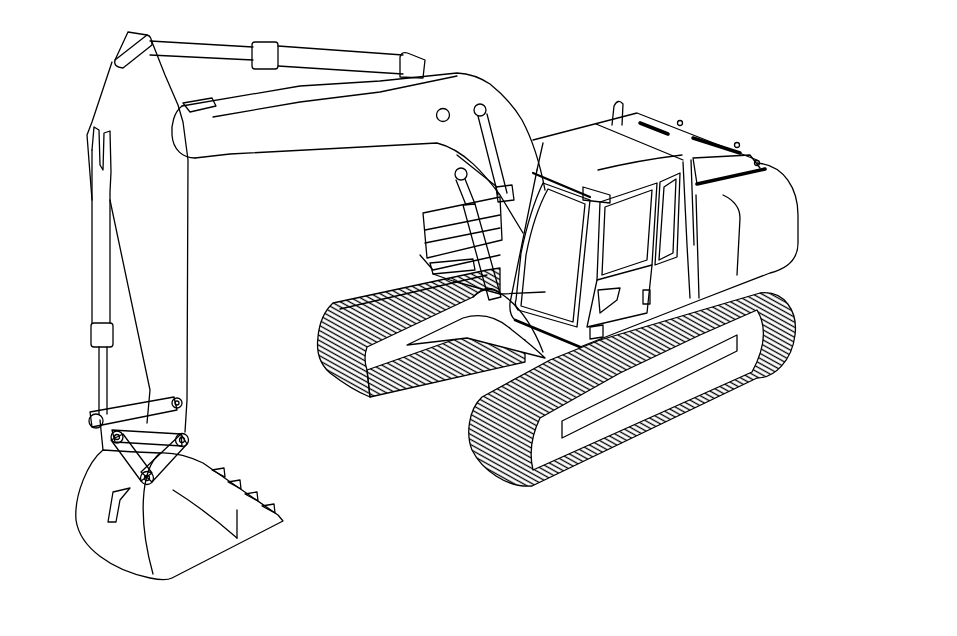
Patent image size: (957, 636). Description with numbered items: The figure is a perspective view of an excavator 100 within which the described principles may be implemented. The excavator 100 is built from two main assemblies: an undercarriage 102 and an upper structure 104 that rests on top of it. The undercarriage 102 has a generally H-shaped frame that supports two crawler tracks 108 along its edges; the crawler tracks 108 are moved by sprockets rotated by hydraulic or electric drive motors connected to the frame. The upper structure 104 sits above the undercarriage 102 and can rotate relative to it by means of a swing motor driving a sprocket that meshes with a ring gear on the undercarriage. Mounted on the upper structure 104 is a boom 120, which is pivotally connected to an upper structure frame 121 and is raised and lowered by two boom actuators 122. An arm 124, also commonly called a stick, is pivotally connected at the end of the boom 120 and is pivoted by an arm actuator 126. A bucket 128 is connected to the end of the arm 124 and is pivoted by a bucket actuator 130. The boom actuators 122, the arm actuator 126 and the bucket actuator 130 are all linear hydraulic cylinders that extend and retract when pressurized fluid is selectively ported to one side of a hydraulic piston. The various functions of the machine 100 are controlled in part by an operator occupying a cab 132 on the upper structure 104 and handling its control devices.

The excavator 100 is at (818, 97).
The undercarriage 102 is at (810, 353).
The upper structure 104 is at (675, 97).
The crawler tracks 108 is at (320, 346).
The boom 120 is at (340, 143).
The upper structure frame 121 is at (768, 269).
The boom actuators 122 is at (467, 200).
The arm 124 is at (175, 282).
The arm actuator 126 is at (318, 48).
The bucket 128 is at (190, 563).
The bucket actuator 130 is at (100, 272).
The cab 132 is at (601, 143).